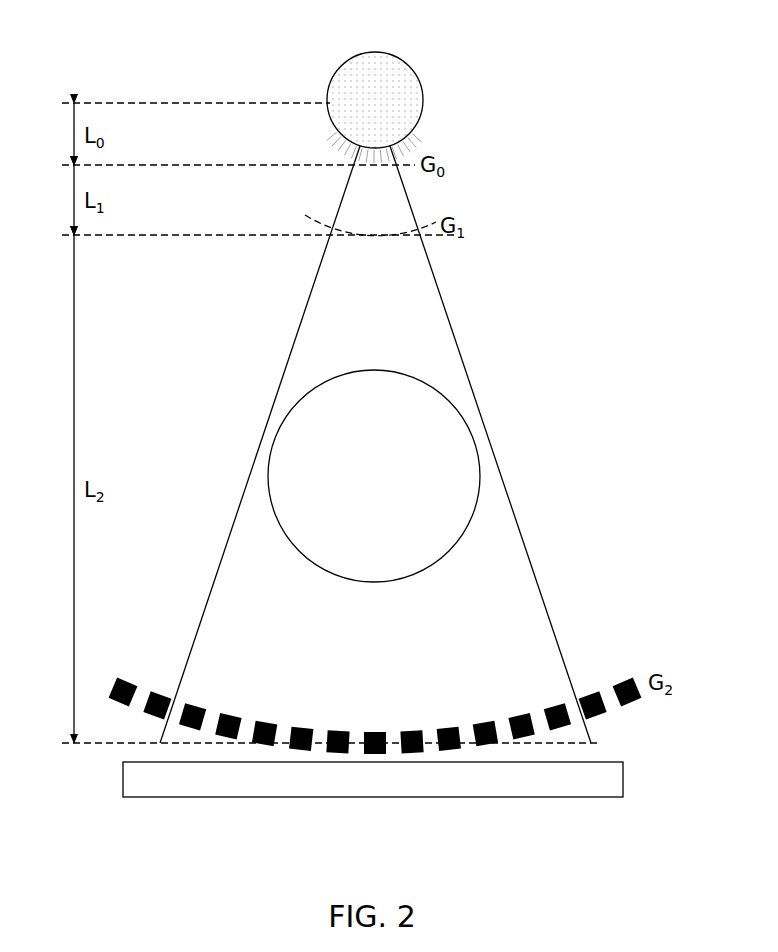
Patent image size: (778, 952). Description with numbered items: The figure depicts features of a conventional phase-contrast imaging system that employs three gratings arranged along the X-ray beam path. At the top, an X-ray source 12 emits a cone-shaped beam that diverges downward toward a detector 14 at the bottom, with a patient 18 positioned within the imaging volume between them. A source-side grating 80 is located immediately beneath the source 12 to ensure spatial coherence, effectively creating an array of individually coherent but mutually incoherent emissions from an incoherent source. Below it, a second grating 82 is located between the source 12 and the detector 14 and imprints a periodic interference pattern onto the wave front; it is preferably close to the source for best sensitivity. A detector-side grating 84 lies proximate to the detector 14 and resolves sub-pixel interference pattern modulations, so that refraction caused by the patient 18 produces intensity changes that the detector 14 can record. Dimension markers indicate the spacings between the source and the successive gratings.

The X-ray source 12 is at (424, 60).
The detector 14 is at (569, 805).
The patient 18 is at (454, 400).
The source-side grating G0 80 is at (325, 145).
The grating G1 82 is at (303, 215).
The grating G2 84 is at (150, 680).